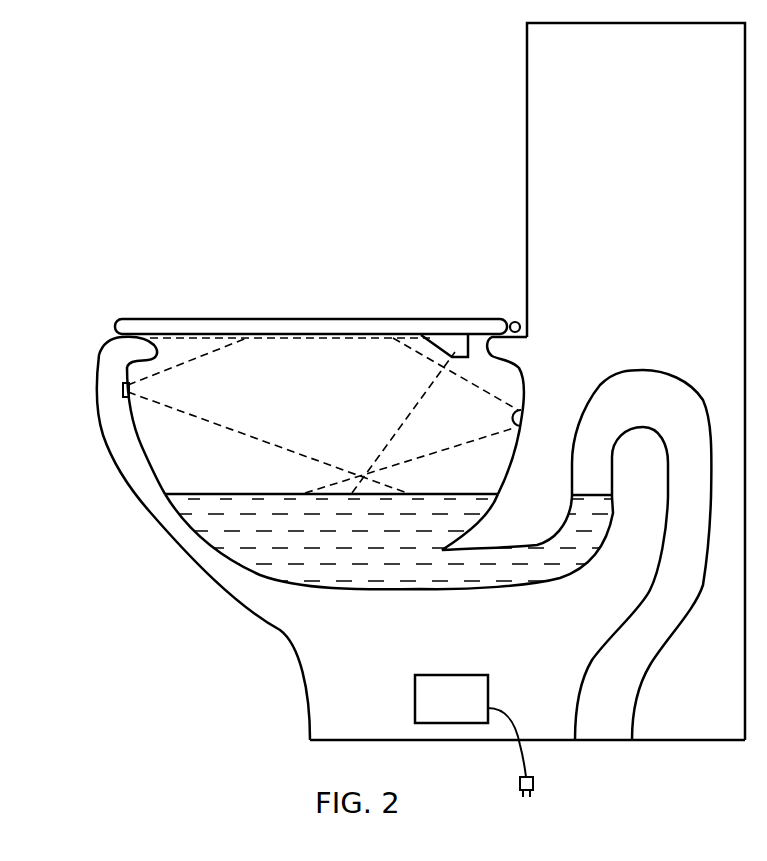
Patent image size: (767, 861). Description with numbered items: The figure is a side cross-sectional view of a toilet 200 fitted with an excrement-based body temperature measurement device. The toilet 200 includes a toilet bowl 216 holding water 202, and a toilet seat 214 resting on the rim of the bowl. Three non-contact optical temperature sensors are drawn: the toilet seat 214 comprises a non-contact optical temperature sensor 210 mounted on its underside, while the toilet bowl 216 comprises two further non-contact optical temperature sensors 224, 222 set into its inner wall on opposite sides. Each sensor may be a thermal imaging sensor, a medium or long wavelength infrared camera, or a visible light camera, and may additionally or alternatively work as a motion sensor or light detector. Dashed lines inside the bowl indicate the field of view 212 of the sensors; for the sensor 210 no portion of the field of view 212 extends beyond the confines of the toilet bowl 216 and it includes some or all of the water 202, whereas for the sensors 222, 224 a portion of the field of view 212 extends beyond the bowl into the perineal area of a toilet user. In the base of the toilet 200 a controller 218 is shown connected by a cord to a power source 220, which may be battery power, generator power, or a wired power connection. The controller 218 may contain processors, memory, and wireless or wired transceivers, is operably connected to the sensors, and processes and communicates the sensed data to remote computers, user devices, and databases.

The toilet 200 is at (663, 120).
The water 202 is at (372, 549).
The non-contact optical temperature sensor 210 is at (455, 358).
The field of view 212 is at (335, 401).
The toilet seat 214 is at (307, 319).
The toilet bowl 216 is at (132, 420).
The controller 218 is at (420, 712).
The power source 220 is at (535, 787).
The non-contact optical temperature sensor 222 is at (525, 416).
The non-contact optical temperature sensor 224 is at (122, 388).